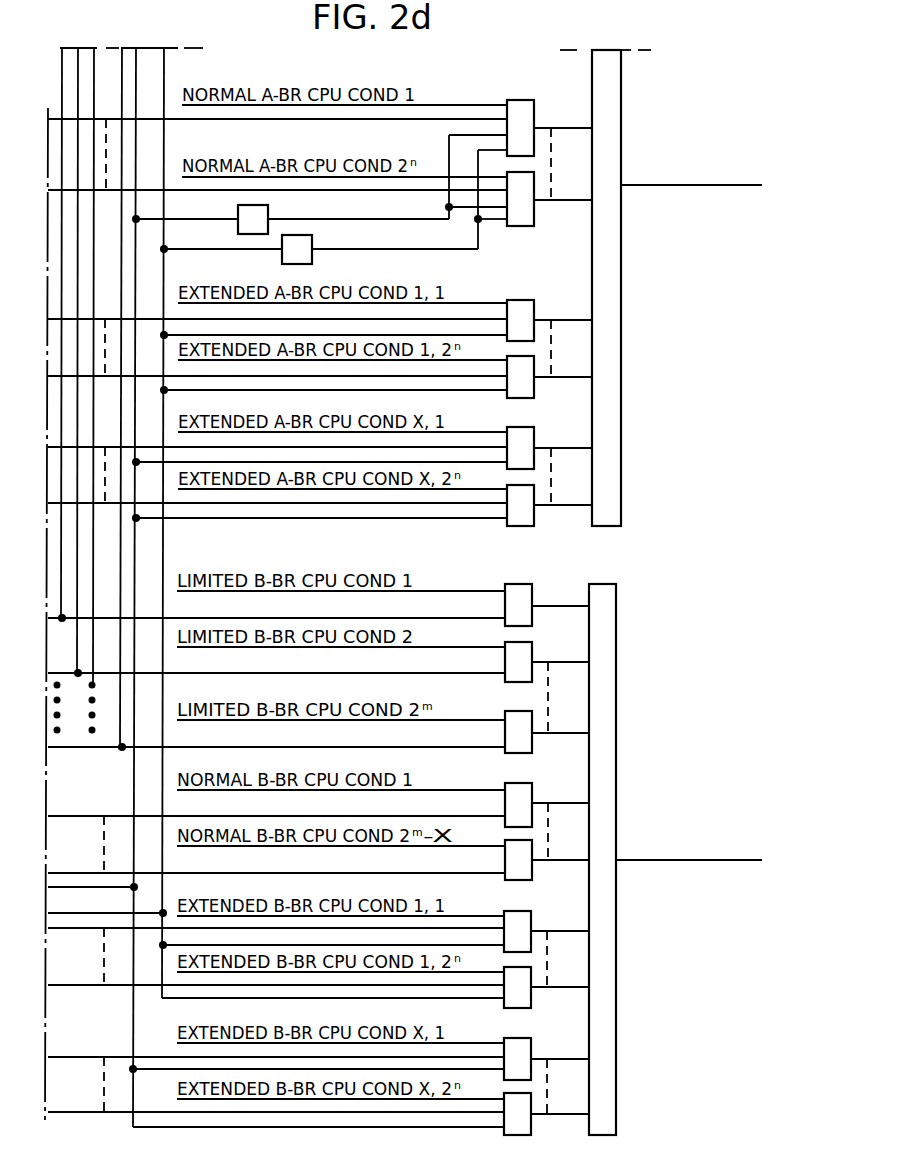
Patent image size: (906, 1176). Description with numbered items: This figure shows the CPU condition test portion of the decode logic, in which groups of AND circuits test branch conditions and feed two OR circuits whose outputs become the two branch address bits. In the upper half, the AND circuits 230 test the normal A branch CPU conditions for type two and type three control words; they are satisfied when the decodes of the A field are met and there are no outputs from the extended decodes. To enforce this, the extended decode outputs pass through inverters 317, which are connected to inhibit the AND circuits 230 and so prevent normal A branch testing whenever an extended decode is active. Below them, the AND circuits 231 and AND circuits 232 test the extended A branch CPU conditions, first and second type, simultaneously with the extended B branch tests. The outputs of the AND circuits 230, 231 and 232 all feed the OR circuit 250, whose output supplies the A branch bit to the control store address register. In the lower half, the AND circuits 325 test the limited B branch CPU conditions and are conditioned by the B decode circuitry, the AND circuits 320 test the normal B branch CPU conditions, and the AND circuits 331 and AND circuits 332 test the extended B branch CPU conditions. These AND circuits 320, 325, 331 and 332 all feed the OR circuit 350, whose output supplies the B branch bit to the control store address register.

The AND circuits 230 is at (564, 117).
The AND circuits 231 is at (558, 310).
The AND circuits 232 is at (566, 428).
The OR circuit 250 is at (621, 242).
The inverters 317 is at (292, 207).
The AND circuits 325 is at (560, 592).
The AND circuits 320 is at (562, 778).
The AND circuits 331 is at (562, 911).
The AND circuits 332 is at (563, 1037).
The OR circuit 350 is at (616, 618).